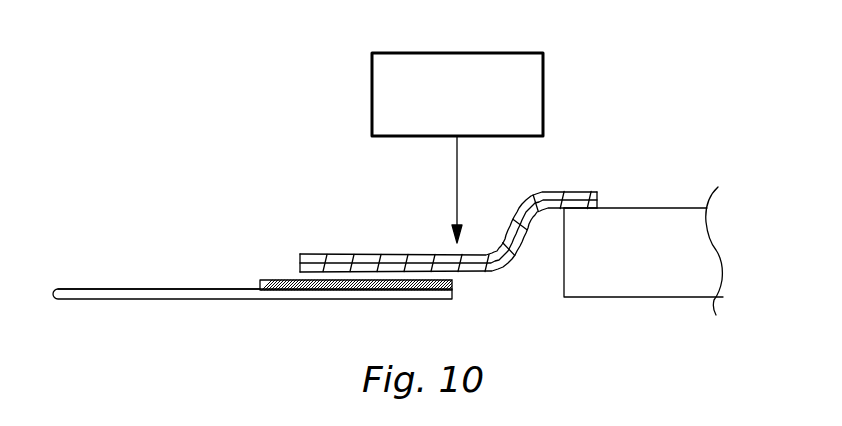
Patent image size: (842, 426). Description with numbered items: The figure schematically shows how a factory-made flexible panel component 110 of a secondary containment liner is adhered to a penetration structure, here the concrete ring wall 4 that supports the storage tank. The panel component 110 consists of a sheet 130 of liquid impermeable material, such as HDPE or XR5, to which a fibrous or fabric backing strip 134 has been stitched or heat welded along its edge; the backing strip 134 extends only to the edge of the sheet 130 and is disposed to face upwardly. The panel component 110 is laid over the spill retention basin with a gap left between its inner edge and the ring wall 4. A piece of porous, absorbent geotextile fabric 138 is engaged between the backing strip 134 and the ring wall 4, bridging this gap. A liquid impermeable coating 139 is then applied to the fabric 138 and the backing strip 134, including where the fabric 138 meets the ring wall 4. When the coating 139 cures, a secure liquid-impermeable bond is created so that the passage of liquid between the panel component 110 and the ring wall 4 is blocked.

The flexible panel component 110 is at (146, 289).
The sheet of liquid impermeable material 130 is at (200, 288).
The backing strip 134 is at (259, 282).
The geotextile fabric substrate 138 is at (500, 273).
The liquid impermeable coating 139 is at (503, 53).
The ring wall 4 is at (713, 242).